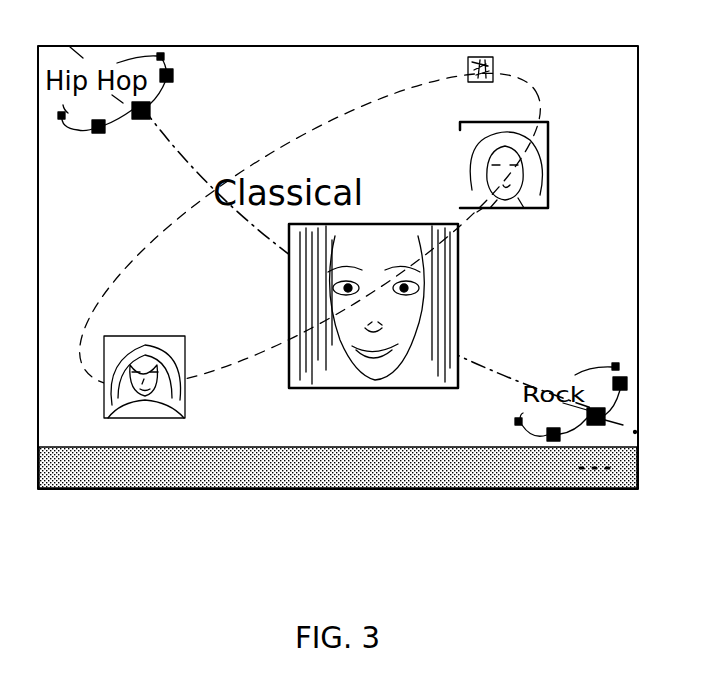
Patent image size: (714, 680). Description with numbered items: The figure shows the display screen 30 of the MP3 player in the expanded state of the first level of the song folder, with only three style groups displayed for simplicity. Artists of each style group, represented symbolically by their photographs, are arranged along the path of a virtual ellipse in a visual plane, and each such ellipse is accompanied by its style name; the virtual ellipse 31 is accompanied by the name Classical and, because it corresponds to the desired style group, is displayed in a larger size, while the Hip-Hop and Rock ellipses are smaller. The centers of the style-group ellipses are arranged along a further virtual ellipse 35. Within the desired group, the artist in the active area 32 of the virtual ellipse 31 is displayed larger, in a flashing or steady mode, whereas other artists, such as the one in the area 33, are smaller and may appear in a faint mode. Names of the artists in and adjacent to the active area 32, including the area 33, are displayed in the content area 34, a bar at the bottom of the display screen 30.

The display screen 30 is at (343, 46).
The virtual ellipse 31 is at (163, 232).
The active area 32 is at (460, 312).
The area 33 is at (177, 335).
The content area 34 is at (218, 482).
The virtual ellipse 35 is at (163, 153).